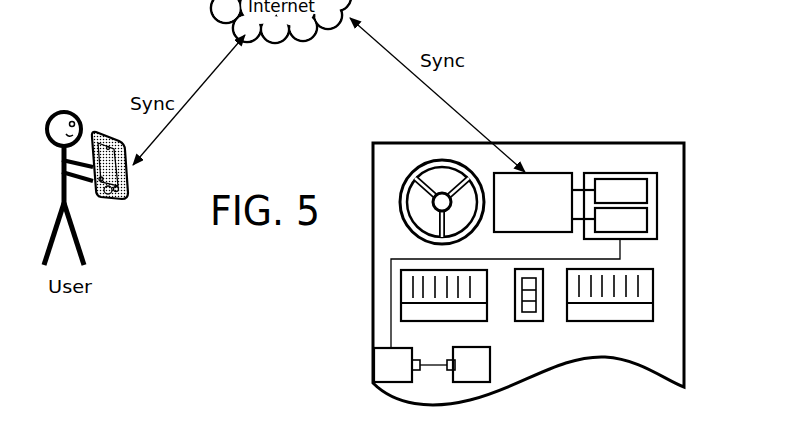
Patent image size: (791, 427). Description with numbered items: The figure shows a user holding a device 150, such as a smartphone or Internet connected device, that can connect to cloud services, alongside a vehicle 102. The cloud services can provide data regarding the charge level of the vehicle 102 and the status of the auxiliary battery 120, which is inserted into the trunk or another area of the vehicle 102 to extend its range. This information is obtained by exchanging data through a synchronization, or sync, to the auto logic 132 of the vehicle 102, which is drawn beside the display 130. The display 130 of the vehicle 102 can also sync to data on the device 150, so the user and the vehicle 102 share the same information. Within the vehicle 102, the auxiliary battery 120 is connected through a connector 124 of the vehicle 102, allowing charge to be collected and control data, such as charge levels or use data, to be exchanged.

The vehicle 102 is at (688, 107).
The display 130 is at (547, 173).
The auto logic 132 is at (600, 173).
The device 150 is at (129, 188).
The connector 124 is at (413, 361).
The auxiliary battery 120 is at (490, 364).